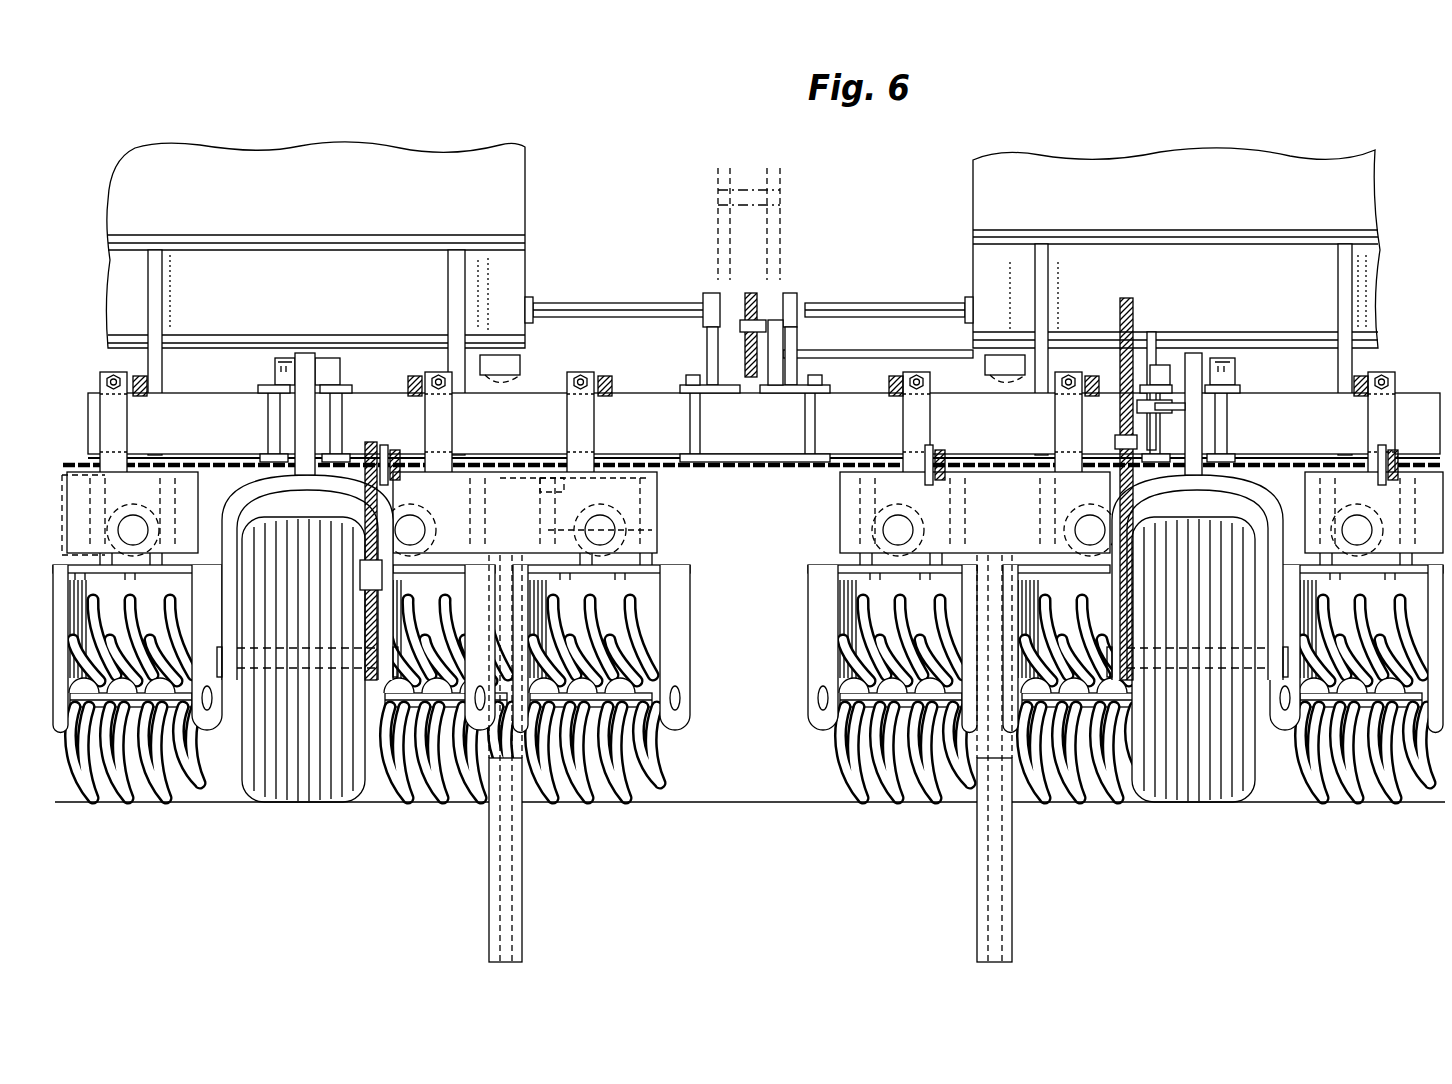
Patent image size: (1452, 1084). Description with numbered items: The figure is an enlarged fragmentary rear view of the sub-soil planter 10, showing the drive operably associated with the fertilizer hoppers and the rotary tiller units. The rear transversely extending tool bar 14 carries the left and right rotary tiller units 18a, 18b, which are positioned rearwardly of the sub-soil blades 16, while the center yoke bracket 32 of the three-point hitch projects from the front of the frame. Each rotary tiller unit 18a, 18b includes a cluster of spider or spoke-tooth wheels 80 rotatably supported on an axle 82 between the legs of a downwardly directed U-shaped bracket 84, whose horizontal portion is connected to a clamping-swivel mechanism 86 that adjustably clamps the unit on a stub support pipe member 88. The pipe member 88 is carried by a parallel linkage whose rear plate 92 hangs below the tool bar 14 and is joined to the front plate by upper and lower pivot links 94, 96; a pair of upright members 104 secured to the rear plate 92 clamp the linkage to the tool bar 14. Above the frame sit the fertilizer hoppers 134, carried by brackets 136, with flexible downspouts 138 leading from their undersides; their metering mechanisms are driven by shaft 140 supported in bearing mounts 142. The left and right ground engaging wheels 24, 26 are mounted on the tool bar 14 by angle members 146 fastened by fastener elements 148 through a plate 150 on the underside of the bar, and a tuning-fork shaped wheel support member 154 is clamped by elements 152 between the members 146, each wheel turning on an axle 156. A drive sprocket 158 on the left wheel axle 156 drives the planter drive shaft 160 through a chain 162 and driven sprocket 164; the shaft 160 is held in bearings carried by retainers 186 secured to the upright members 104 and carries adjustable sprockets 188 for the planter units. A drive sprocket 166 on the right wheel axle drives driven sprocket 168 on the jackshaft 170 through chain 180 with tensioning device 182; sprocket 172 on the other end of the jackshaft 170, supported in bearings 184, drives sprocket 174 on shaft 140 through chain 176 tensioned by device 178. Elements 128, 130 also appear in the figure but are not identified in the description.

The sub-soil planter 10 is at (652, 143).
The rear tool bar 14 is at (232, 392).
The sub-soil blades 16 is at (520, 922).
The left rotary tiller unit 18a is at (425, 822).
The right rotary tiller unit 18b is at (143, 822).
The left ground engaging wheel 24 is at (275, 800).
The right ground engaging wheel 26 is at (1232, 800).
The center yoke bracket 32 is at (782, 196).
The spider or spoke-tooth wheels 80 is at (645, 605).
The axle 82 is at (682, 698).
The U-shaped bracket 84 is at (690, 630).
The clamping-swivel mechanism 86 is at (660, 556).
The stub support pipe member 88 is at (658, 522).
The rear plate 92 is at (62, 472).
The upper pivot link 94 is at (540, 484).
The lower pivot link 96 is at (548, 535).
The upright members 104 is at (128, 418).
The clamp block 128 is at (133, 378).
The clamp block 130 is at (150, 495).
The fertilizer hoppers 134 is at (743, 245).
The brackets 136 is at (148, 282).
The flexible downspouts 138 is at (520, 368).
The shaft 140 is at (622, 303).
The bearing mounts 142 is at (705, 330).
The angle members 146 is at (322, 358).
The fastener elements 148 is at (268, 418).
The plate 150 is at (1227, 452).
The clamping elements 152 is at (330, 358).
The tuning-fork shaped wheel support member 154 is at (300, 491).
The axles 156 is at (236, 742).
The drive sprocket 158 is at (345, 690).
The planter drive shaft 160 is at (770, 470).
The chain 162 is at (365, 497).
The driven sprocket 164 is at (370, 442).
The drive sprocket 166 is at (1150, 740).
The driven sprocket 168 is at (1128, 298).
The jackshaft 170 is at (940, 350).
The sprocket 172 is at (752, 380).
The sprocket 174 is at (745, 300).
The chain 176 is at (740, 330).
The tensioning device 178 is at (773, 318).
The chain 180 is at (1137, 408).
The tensioning device 182 is at (1168, 400).
The bearings 184 is at (775, 385).
The retainers 186 is at (384, 455).
The sprockets 188 is at (400, 462).